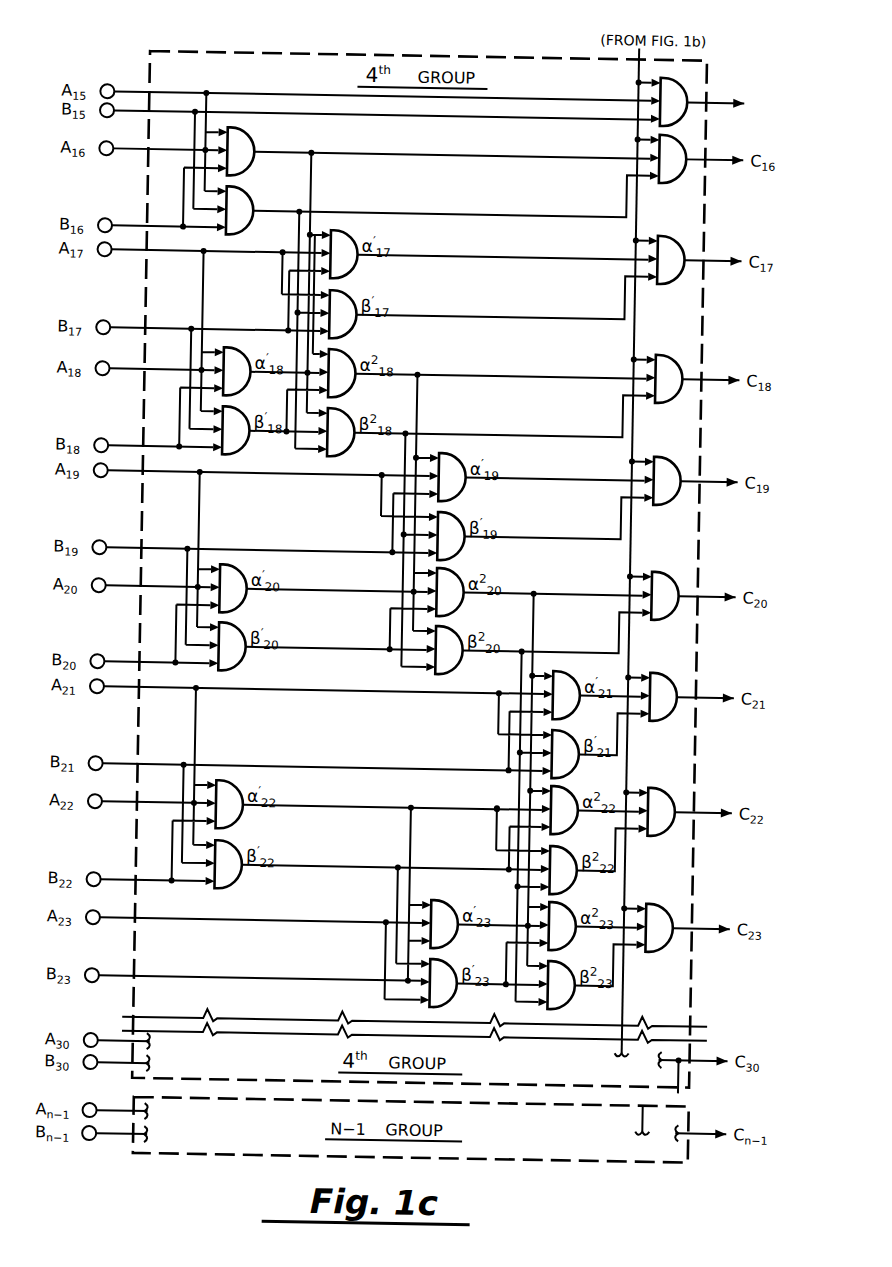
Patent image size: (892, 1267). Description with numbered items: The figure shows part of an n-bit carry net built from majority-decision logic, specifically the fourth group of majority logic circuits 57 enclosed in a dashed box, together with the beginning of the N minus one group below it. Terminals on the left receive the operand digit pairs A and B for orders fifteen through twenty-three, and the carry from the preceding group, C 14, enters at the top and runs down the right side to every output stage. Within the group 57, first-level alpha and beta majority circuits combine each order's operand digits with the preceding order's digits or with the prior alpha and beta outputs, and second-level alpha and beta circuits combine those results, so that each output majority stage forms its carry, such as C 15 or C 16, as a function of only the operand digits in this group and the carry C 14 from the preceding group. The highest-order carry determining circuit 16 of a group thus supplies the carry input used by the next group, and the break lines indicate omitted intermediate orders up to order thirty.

The fourth group of majority logic circuits 57 is at (378, 51).
The carry input C14 line from FIG. 1b 14 is at (591, 544).
The carry output gate C15 15 is at (713, 103).
The carry digit determining circuit 16 is at (252, 181).